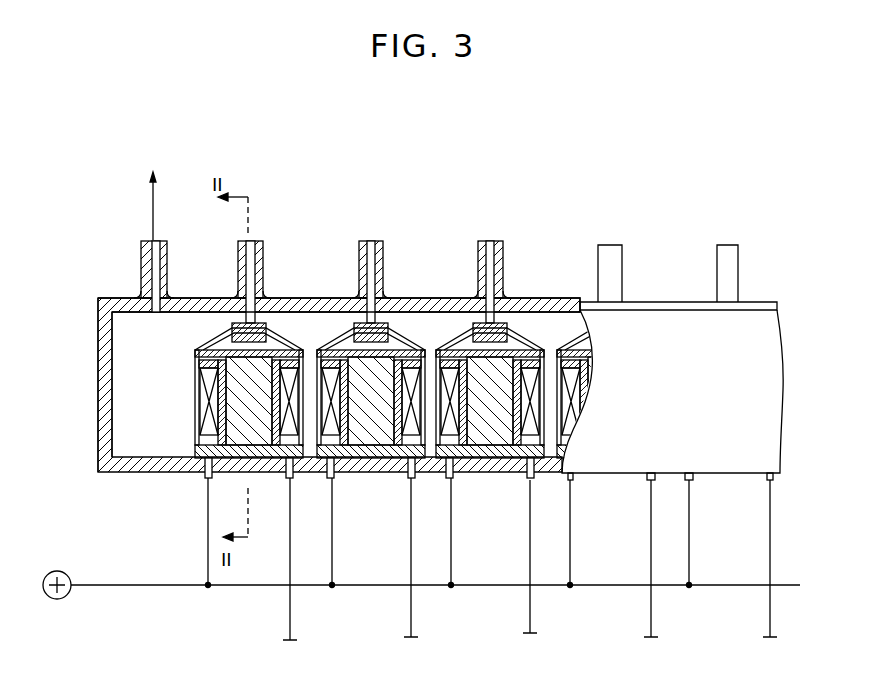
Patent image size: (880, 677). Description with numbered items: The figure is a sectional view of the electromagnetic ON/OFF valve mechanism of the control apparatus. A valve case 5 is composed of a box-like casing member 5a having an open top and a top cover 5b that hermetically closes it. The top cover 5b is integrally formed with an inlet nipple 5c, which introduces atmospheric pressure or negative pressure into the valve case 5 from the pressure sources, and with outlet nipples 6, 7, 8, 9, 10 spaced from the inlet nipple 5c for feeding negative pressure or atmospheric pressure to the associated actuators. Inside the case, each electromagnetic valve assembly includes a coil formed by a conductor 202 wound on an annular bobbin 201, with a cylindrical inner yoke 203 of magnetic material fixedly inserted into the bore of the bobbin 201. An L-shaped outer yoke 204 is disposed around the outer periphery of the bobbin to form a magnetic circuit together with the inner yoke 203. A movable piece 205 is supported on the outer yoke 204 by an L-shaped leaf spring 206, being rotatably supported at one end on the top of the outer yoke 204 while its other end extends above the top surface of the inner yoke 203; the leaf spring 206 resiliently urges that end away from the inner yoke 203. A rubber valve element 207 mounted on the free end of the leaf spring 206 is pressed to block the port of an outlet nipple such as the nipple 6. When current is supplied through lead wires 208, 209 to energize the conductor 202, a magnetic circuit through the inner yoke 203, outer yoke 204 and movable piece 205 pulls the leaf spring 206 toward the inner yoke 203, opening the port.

The valve case 5 is at (463, 222).
The casing member 5a is at (448, 297).
The top cover 5b is at (104, 393).
The inlet nipple 5c is at (167, 257).
The outlet nipple 6 is at (263, 260).
The outlet nipple 7 is at (360, 258).
The outlet nipple 8 is at (503, 253).
The outlet nipple 9 is at (622, 258).
The outlet nipple 10 is at (738, 260).
The annular bobbin 201 is at (200, 365).
The conductor 202 is at (203, 392).
The inner yoke 203 is at (258, 440).
The outer yoke 204 is at (195, 452).
The movable piece 205 is at (275, 344).
The leaf spring 206 is at (217, 342).
The valve element 207 is at (335, 310).
The lead wire 208 is at (208, 520).
The lead wire 209 is at (290, 533).